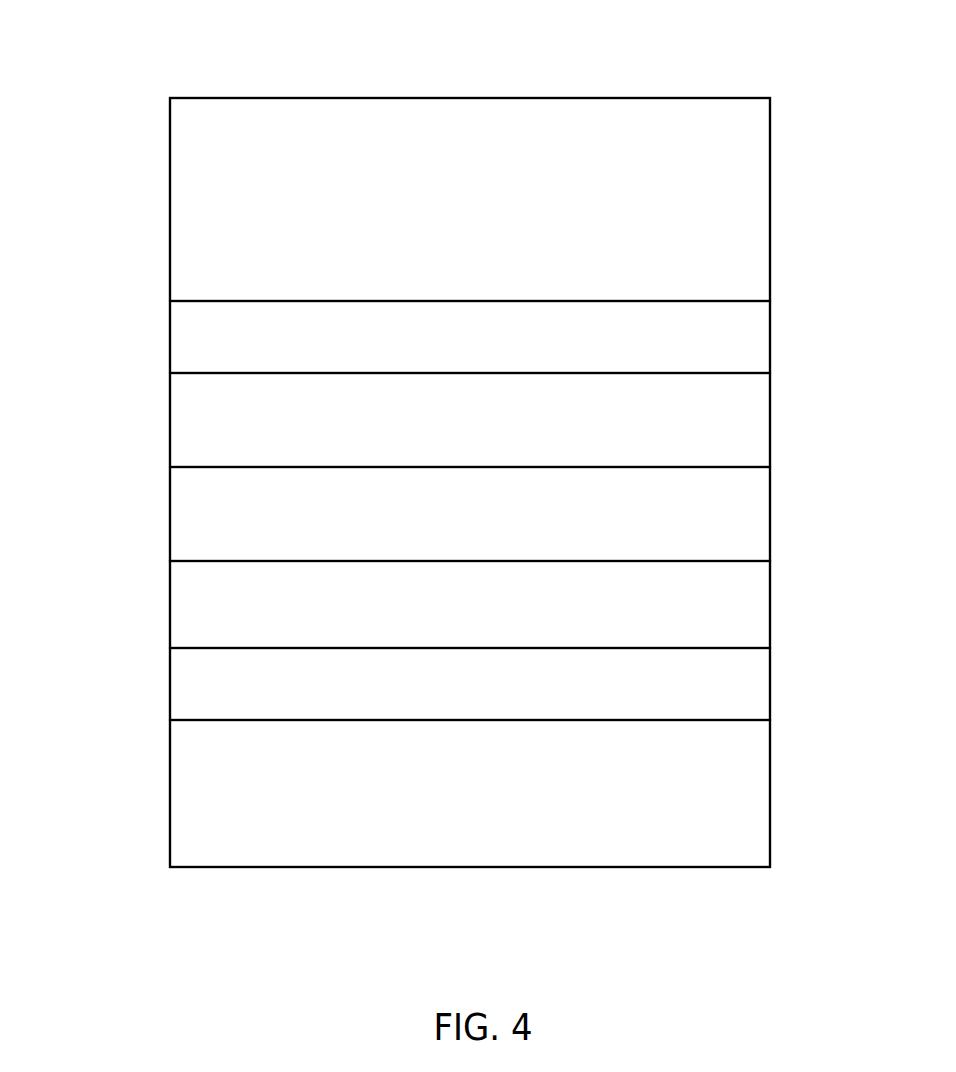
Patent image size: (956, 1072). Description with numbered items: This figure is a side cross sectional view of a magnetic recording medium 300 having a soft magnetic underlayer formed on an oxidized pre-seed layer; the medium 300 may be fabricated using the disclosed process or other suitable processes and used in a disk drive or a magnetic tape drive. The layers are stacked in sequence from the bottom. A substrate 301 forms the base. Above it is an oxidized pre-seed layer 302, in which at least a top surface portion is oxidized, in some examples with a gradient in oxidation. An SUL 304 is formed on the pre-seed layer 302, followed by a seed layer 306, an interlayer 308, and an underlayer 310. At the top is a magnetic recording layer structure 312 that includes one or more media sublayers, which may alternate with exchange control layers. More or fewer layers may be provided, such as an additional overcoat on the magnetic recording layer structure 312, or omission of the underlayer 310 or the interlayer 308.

The magnetic recording medium 300 is at (106, 62).
The substrate 301 is at (771, 778).
The oxidized pre-seed layer 302 is at (771, 698).
The SUL 304 is at (771, 601).
The seed layer 306 is at (771, 518).
The interlayer 308 is at (771, 426).
The underlayer 310 is at (771, 333).
The magnetic recording layer structure 312 is at (771, 240).